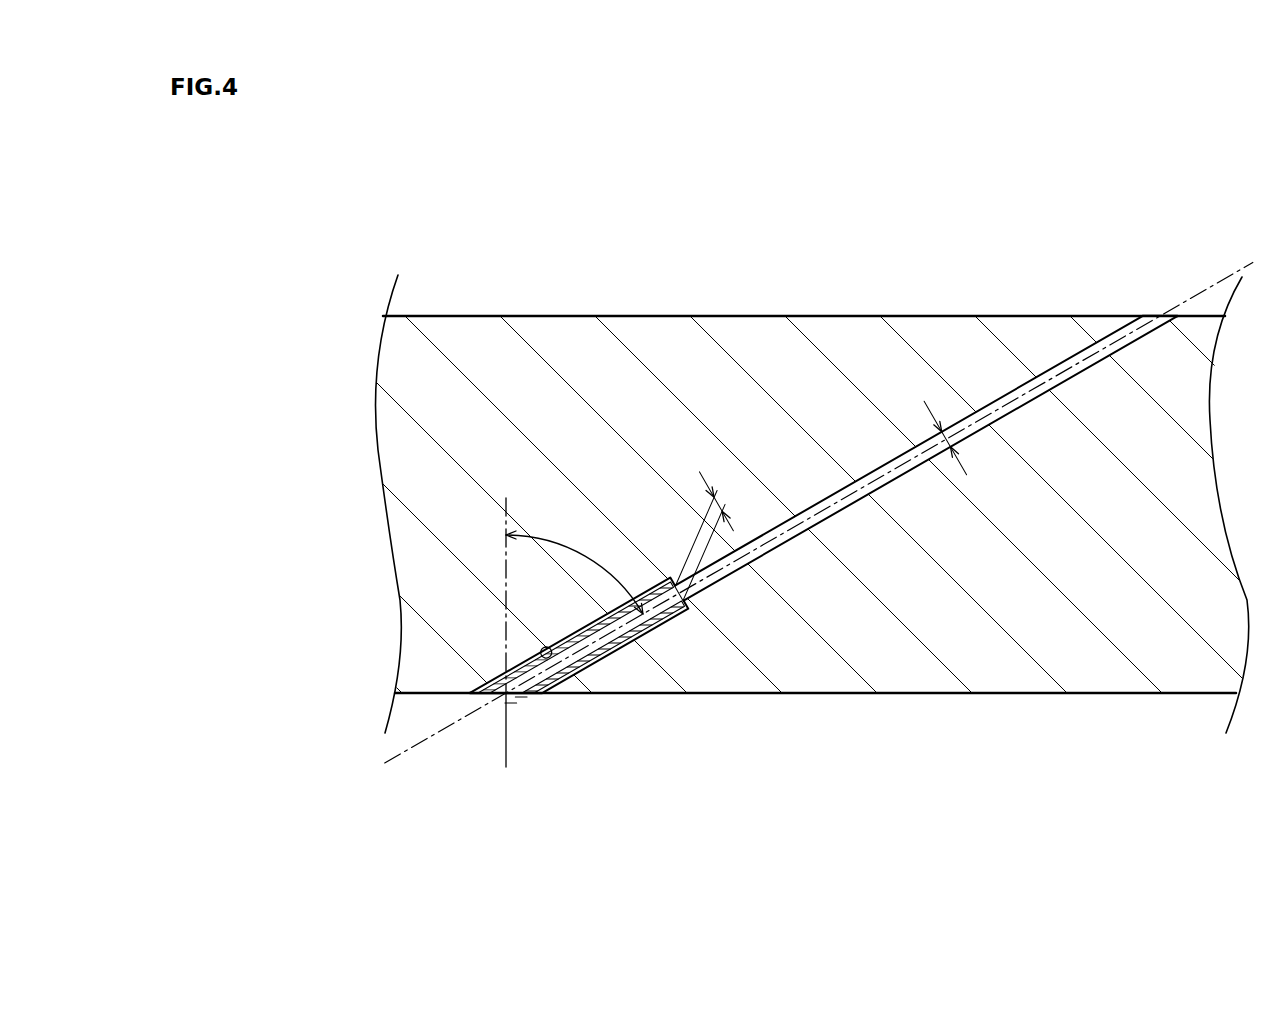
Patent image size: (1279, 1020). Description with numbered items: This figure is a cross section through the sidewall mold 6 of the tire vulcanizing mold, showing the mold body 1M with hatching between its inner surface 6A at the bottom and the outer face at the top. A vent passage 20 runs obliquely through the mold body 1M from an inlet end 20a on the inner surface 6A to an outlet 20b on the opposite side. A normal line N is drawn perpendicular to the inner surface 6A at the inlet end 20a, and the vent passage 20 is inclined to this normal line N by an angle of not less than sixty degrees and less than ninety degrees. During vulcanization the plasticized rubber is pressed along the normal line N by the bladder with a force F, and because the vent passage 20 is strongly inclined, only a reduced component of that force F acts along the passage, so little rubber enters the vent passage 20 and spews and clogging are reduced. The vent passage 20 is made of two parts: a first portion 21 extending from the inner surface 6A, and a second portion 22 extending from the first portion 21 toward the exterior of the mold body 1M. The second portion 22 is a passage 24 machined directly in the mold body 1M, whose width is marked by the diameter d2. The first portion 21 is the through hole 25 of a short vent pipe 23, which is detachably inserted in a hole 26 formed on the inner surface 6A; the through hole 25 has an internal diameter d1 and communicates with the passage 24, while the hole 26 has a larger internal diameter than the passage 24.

The mold body 1M is at (568, 310).
The sidewall mold 6 is at (864, 348).
The inner surface 6A is at (934, 697).
The vent passage 20 is at (782, 540).
The inlet end 20a is at (512, 709).
The upper opening of passage 20b is at (1153, 315).
The first portion 21 is at (635, 729).
The through hole 25 is at (621, 642).
The second portion 22 is at (977, 559).
The passage 24 is at (855, 515).
The vent pipe 23 is at (596, 682).
The hole 26 is at (546, 648).
The internal diameter d1 is at (710, 525).
The diameter of second passage d2 is at (934, 426).
The normal line N is at (505, 520).
The force F is at (494, 730).